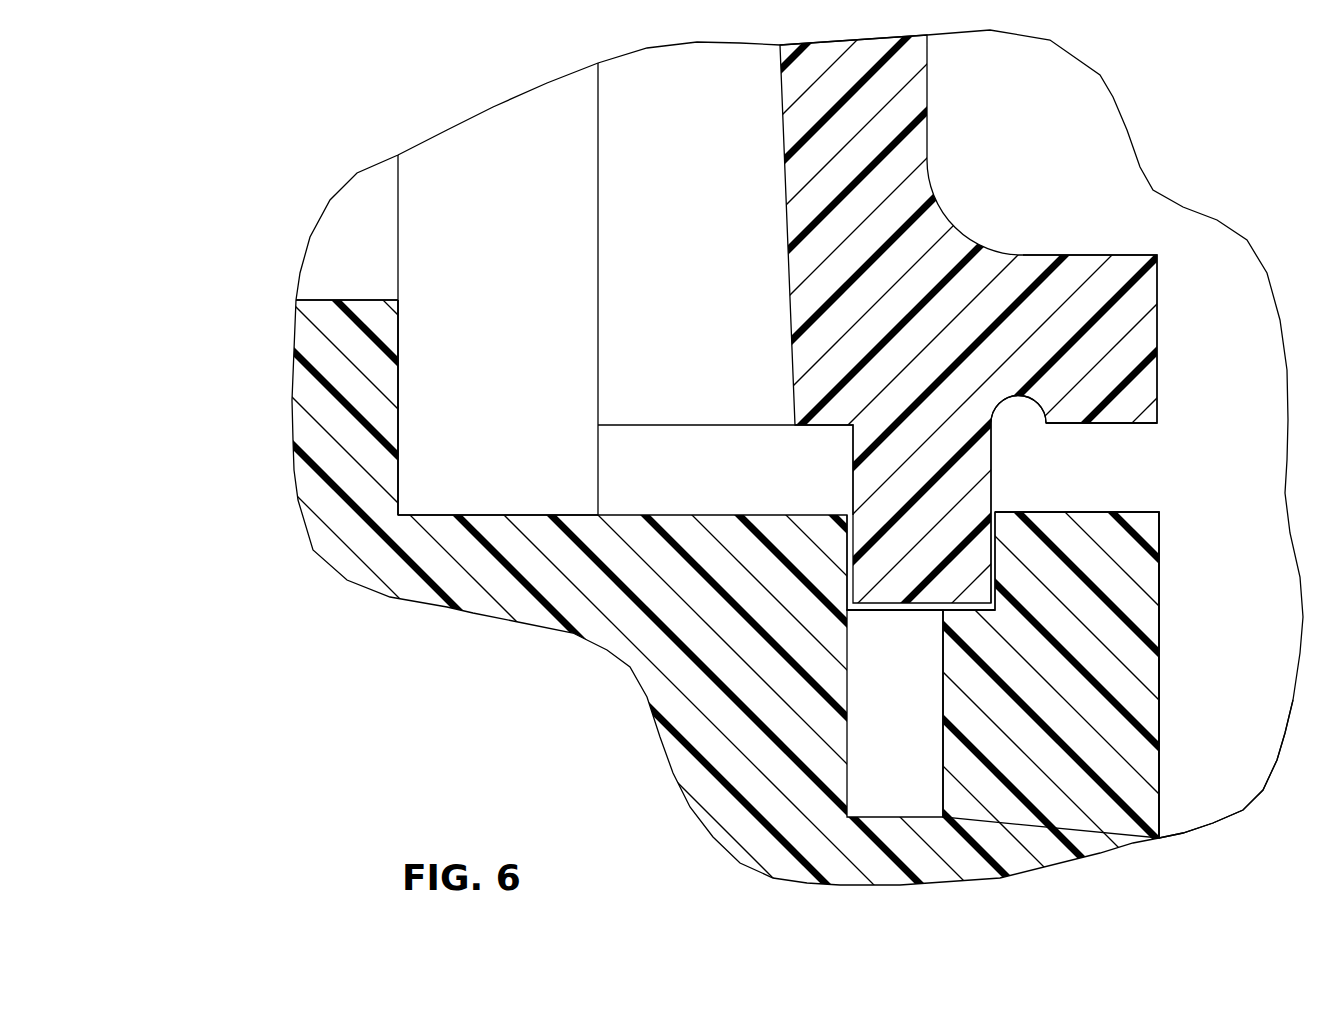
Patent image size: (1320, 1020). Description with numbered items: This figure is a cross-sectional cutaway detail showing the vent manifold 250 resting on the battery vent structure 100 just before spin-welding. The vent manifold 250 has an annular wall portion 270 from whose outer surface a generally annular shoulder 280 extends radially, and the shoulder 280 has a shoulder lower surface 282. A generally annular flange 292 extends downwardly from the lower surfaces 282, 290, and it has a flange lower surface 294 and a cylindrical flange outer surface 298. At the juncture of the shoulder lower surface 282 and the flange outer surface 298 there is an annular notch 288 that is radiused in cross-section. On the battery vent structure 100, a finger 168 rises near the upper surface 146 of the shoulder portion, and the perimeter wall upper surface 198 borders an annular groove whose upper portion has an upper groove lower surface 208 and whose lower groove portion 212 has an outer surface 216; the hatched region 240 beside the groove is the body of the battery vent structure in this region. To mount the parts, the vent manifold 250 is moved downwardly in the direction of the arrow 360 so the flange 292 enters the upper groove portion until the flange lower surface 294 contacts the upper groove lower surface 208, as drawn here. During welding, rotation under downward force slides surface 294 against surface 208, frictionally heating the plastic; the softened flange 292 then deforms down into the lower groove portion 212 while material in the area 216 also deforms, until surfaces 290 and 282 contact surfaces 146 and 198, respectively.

The battery vent structure 100 is at (1207, 787).
The upper surface of the shoulder portion 146 is at (723, 510).
The finger 168 is at (563, 205).
The perimeter wall upper surface 198 is at (1141, 512).
The upper groove lower surface 208 is at (1003, 572).
The lower groove portion 212 is at (919, 790).
The lower groove portion outer surface 216 is at (943, 735).
The support block body 240 is at (992, 654).
The vent manifold 250 is at (1210, 104).
The annular wall portion 270 is at (893, 92).
The shoulder 280 is at (1165, 322).
The shoulder lower surface 282 is at (1145, 424).
The annular notch 288 is at (1014, 407).
The lower surface 290 is at (826, 430).
The flange 292 is at (937, 498).
The flange lower surface 294 is at (876, 615).
The flange outer surface 298 is at (990, 466).
The arrow 360 is at (133, 340).